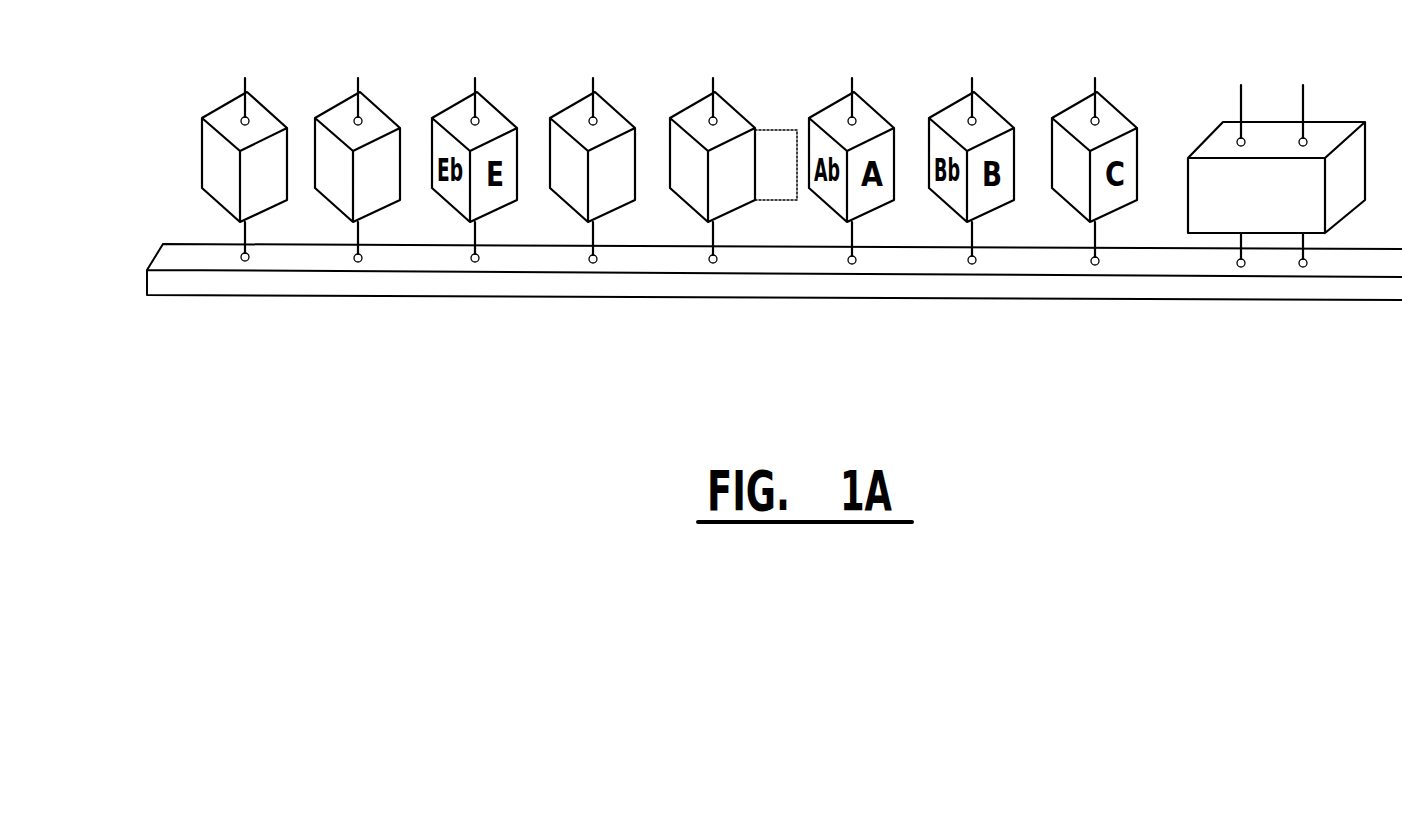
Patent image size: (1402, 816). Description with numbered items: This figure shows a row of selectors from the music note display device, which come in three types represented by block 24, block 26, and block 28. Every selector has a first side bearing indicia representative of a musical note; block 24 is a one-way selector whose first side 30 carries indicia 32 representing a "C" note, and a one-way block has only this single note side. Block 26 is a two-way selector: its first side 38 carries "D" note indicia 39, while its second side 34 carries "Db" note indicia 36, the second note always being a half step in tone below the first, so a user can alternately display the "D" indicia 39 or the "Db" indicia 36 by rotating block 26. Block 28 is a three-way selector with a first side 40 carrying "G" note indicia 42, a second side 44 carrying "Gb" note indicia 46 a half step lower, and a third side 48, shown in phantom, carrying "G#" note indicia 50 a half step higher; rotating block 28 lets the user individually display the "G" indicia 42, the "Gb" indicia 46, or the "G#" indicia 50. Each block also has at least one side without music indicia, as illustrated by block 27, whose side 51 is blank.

The block 24 is at (215, 108).
The block 26 is at (340, 103).
The block 27 is at (565, 110).
The block 28 is at (685, 112).
The first side 30 is at (268, 197).
The indicia 32 is at (257, 170).
The second side 34 is at (340, 197).
The Db note indicia 36 is at (327, 173).
The first side 38 is at (370, 200).
The D note indicia 39 is at (385, 180).
The first side 40 is at (740, 200).
The G note indicia 42 is at (730, 187).
The second side 44 is at (693, 203).
The Gb note indicia 46 is at (673, 177).
The third side 48 is at (773, 193).
The G# note indicia 50 is at (785, 182).
The blank side 51 is at (572, 177).